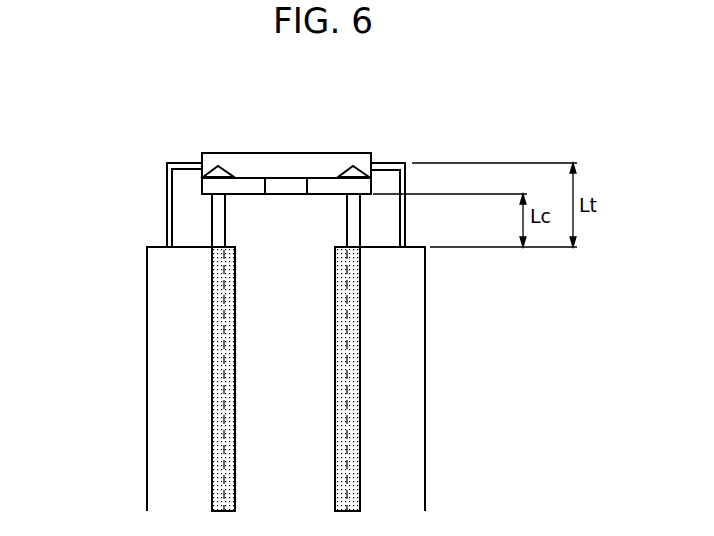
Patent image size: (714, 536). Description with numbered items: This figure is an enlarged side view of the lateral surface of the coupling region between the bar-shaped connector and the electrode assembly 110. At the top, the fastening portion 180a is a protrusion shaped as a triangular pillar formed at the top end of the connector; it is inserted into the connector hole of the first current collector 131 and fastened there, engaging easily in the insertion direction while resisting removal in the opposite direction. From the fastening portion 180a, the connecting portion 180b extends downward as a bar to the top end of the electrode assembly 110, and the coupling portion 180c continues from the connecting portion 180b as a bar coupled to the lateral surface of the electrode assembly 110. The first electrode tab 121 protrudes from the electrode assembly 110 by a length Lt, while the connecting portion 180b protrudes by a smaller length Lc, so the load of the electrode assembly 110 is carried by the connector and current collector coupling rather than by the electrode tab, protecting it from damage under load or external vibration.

The electrode assembly 110 is at (392, 410).
The first electrode tab 121 is at (167, 165).
The first current collector 131 is at (218, 163).
The fastening portion 180a is at (348, 173).
The connecting portion 180b is at (218, 240).
The coupling portion 180c is at (212, 313).